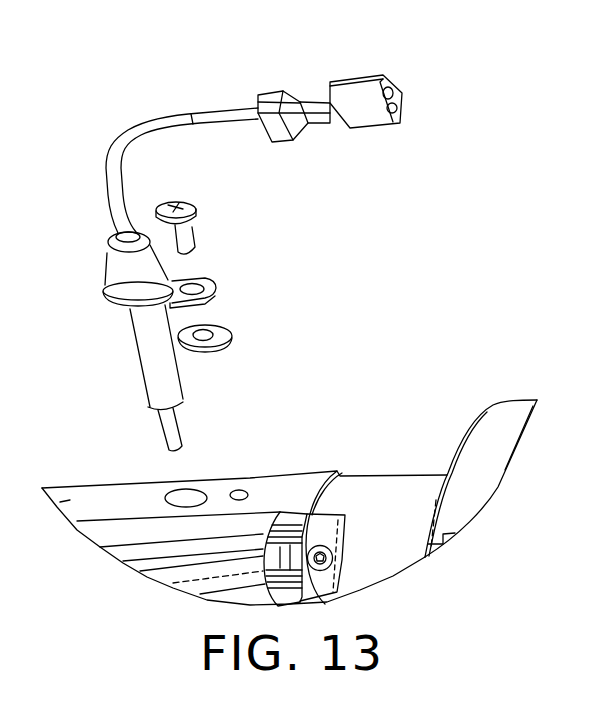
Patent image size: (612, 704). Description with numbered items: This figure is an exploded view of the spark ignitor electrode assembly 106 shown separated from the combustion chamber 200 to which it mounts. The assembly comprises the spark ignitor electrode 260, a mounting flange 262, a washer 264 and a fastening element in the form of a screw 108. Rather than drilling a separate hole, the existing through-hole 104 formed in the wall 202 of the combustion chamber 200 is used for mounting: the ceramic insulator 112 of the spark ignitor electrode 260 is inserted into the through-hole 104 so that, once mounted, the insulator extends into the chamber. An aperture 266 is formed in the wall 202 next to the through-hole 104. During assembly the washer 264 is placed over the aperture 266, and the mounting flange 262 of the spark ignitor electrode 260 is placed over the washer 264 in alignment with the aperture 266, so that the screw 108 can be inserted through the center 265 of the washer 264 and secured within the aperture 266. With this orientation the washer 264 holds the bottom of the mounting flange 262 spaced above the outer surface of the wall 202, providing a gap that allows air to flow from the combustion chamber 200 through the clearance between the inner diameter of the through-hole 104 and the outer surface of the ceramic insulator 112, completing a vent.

The spark ignitor electrode assembly 106 is at (164, 100).
The spark ignitor electrode 260 is at (107, 150).
The screw 108 is at (188, 200).
The ceramic insulator 112 is at (138, 327).
The mounting flange 262 is at (186, 283).
The washer 264 is at (232, 338).
The center 265 is at (204, 334).
The combustion chamber 200 is at (289, 464).
The wall 202 is at (78, 500).
The through-hole 104 is at (181, 496).
The aperture 266 is at (241, 491).